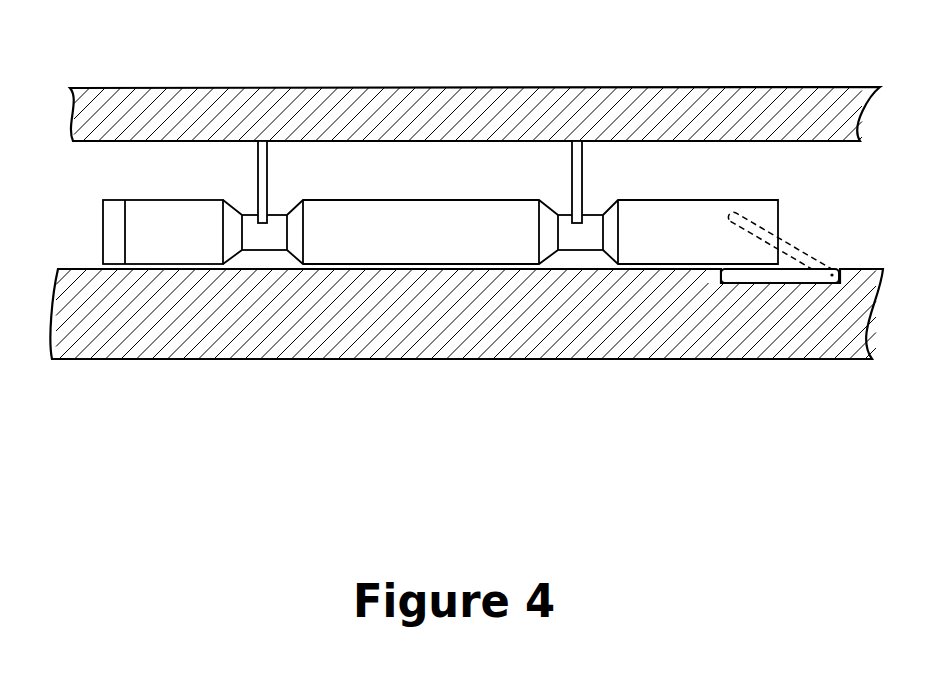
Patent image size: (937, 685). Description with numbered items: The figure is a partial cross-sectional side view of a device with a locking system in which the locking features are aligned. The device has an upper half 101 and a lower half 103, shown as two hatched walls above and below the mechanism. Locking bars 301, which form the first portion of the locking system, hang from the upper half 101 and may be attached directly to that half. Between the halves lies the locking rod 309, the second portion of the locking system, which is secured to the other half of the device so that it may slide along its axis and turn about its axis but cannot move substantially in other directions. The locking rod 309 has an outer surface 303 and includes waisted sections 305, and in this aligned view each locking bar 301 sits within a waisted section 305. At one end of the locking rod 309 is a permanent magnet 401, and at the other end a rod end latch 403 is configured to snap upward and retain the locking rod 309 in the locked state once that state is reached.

The upper half 101 is at (140, 87).
The lower half 103 is at (117, 350).
The locking bars 301 is at (268, 172).
The outer surface 303 is at (435, 200).
The waisted sections 305 is at (283, 210).
The locking rod 309 is at (458, 212).
The permanent magnet 401 is at (110, 217).
The rod end latch 403 is at (820, 274).